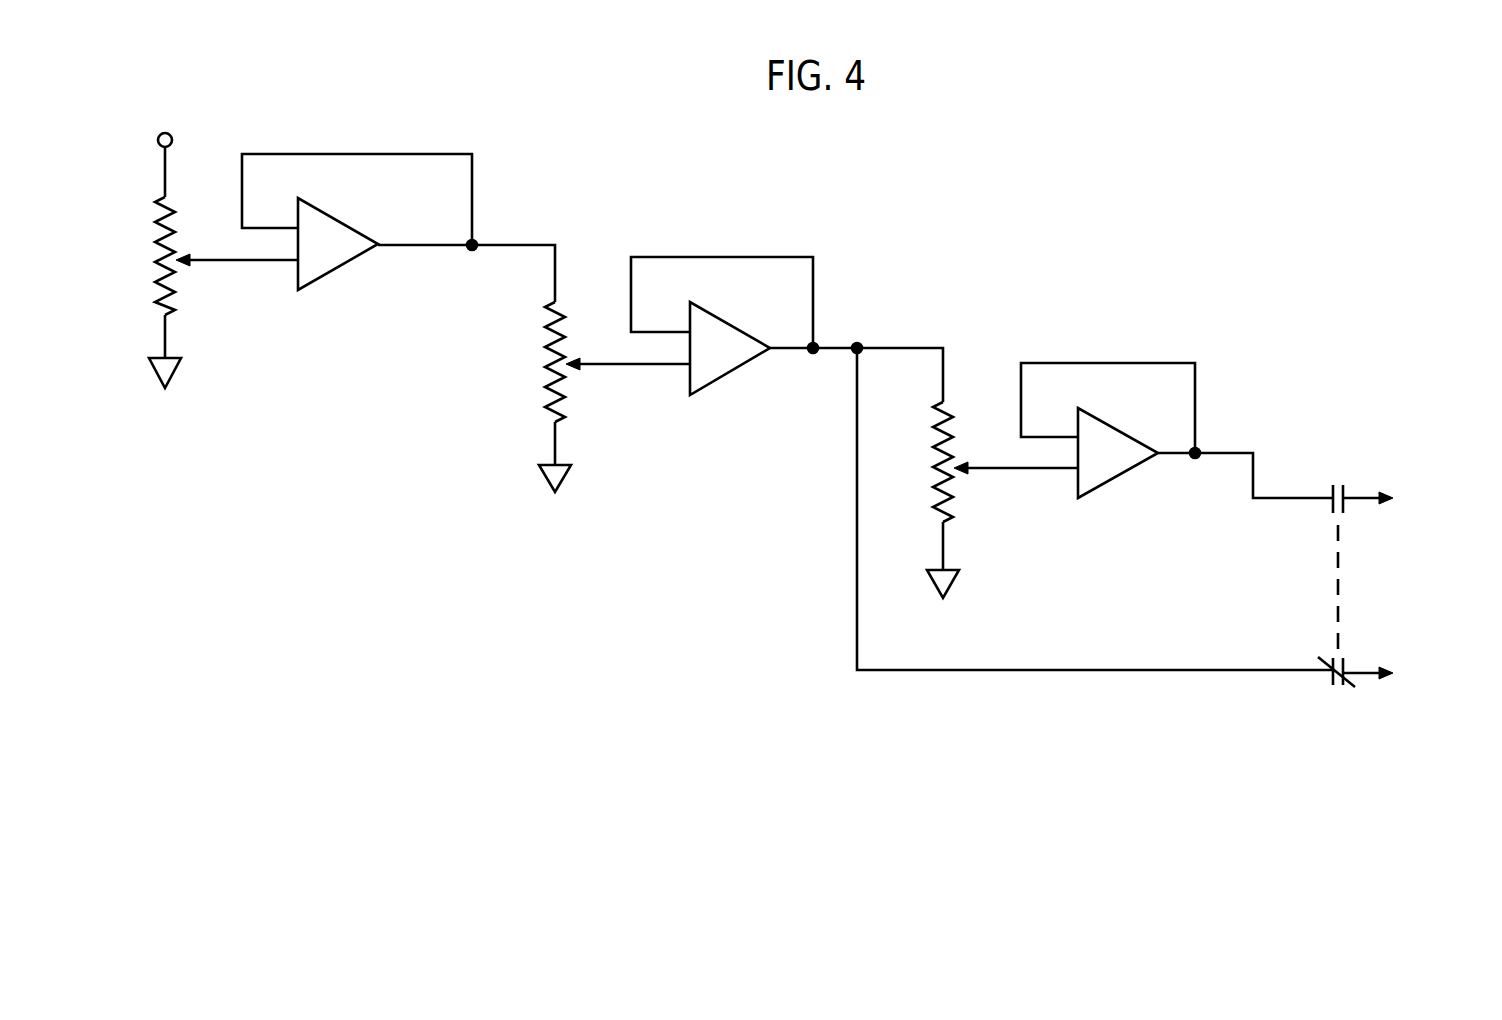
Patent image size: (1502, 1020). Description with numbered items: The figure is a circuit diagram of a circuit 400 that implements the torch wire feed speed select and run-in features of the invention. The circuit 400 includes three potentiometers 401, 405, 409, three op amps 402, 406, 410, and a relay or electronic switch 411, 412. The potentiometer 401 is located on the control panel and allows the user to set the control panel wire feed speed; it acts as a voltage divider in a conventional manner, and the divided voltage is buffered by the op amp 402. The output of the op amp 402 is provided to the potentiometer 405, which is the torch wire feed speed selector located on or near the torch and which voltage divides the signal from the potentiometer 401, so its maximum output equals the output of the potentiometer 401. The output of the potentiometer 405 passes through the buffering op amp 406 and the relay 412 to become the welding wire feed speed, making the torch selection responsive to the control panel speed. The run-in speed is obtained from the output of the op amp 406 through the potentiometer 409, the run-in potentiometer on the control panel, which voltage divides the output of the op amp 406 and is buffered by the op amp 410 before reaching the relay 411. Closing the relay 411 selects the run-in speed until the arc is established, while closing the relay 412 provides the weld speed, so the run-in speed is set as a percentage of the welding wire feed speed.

The circuit 400 is at (922, 205).
The potentiometer 401 is at (172, 197).
The op amp 402 is at (352, 268).
The potentiometer 405 is at (565, 302).
The op amp 406 is at (742, 372).
The potentiometer 409 is at (956, 403).
The op amp 410 is at (1130, 478).
The relay 411 is at (1347, 493).
The relay 412 is at (1332, 678).